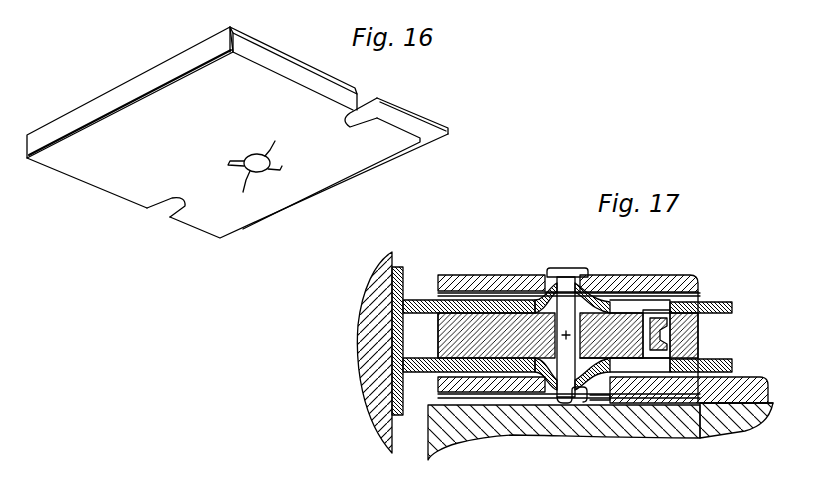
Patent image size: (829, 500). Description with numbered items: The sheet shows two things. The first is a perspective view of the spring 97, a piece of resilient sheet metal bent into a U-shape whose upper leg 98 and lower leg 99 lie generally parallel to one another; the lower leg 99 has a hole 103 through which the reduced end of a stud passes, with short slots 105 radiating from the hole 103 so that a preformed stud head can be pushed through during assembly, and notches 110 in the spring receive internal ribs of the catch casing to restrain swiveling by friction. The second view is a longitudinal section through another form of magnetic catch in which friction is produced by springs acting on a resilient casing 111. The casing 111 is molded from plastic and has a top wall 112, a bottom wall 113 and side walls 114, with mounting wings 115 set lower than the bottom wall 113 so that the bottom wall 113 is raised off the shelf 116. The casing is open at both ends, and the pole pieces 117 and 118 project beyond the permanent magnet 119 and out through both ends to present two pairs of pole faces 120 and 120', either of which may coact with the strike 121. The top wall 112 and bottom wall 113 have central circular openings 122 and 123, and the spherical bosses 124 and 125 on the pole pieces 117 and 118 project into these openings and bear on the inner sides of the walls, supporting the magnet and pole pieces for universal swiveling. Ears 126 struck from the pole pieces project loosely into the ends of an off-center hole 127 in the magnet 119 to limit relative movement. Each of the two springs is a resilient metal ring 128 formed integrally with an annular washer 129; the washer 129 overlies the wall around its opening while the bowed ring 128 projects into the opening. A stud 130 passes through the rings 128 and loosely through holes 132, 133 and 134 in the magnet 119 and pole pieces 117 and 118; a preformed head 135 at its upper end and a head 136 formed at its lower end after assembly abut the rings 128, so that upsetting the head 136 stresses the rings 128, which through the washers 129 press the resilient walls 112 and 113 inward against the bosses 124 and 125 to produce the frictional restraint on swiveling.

In FIG. 16, the spring 97 is at (104, 88).
In FIG. 16, the upper leg 98 is at (420, 118).
In FIG. 16, the lower leg 99 is at (362, 158).
In FIG. 16, the hole 103 is at (252, 155).
In FIG. 16, the slots 105 is at (273, 148).
In FIG. 16, the notches 110 is at (362, 110).
In FIG. 17, the casing 111 is at (686, 266).
In FIG. 17, the top wall 112 is at (688, 278).
In FIG. 17, the bottom wall 113 is at (690, 403).
In FIG. 17, the side walls 114 is at (668, 332).
In FIG. 17, the mounting wings 115 is at (750, 420).
In FIG. 17, the shelf 116 is at (680, 433).
In FIG. 17, the pole piece 117 is at (705, 300).
In FIG. 17, the pole piece 118 is at (705, 366).
In FIG. 17, the permanent magnet 119 is at (490, 398).
In FIG. 17, the pole faces 120 is at (427, 336).
In FIG. 17, the pole faces 120' is at (731, 329).
In FIG. 17, the strike 121 is at (412, 250).
In FIG. 17, the circular opening 122 is at (635, 280).
In FIG. 17, the circular opening 123 is at (564, 436).
In FIG. 17, the spherical boss 124 is at (530, 322).
In FIG. 17, the spherical boss 125 is at (540, 345).
In FIG. 17, the ears 126 is at (657, 335).
In FIG. 17, the off-center hole 127 is at (682, 339).
In FIG. 17, the resilient metal ring 128 is at (545, 292).
In FIG. 17, the annular washer 129 is at (522, 272).
In FIG. 17, the stud 130 is at (556, 270).
In FIG. 17, the hole 132 is at (584, 354).
In FIG. 17, the hole 133 is at (611, 335).
In FIG. 17, the hole 134 is at (568, 404).
In FIG. 17, the head 135 is at (577, 268).
In FIG. 17, the head 136 is at (606, 402).